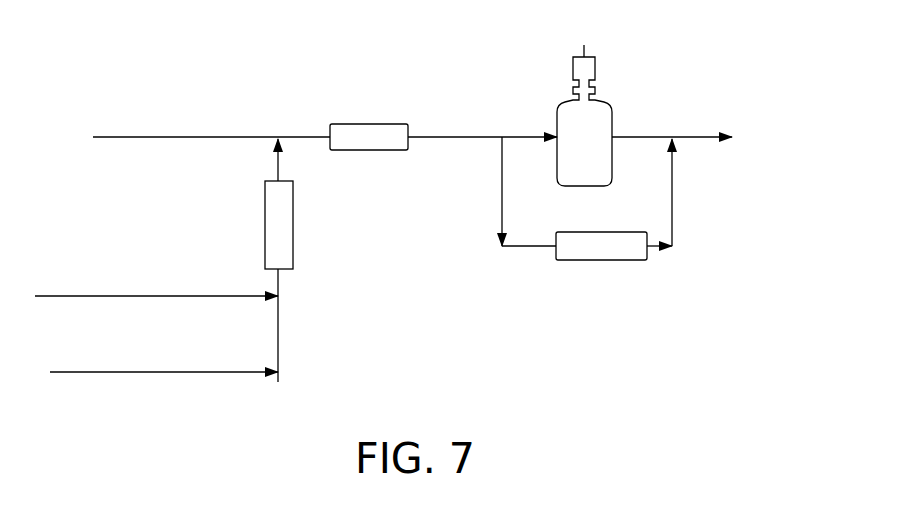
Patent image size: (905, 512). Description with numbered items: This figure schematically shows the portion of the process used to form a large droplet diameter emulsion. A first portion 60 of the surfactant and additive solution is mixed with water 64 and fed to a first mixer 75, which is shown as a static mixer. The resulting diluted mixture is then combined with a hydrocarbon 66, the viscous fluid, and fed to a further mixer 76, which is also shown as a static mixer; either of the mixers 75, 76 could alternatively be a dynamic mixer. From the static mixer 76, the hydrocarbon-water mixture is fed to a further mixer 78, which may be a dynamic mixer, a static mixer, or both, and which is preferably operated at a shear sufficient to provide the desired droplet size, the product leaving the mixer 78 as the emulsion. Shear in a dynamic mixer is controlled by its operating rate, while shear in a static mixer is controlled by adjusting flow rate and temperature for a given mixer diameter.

The first portion 60 is at (155, 372).
The water 64 is at (150, 296).
The hydrocarbon 66 is at (200, 137).
The first mixer 75 is at (265, 232).
The further mixer 76 is at (372, 124).
The further mixer 78 is at (610, 228).